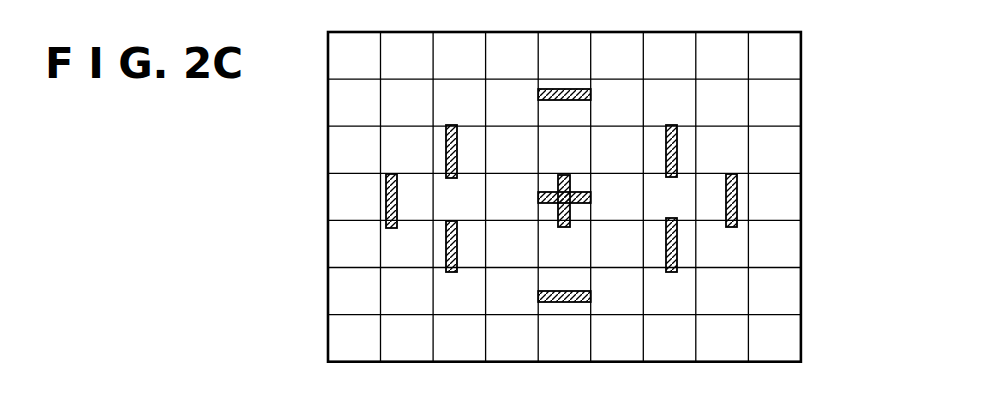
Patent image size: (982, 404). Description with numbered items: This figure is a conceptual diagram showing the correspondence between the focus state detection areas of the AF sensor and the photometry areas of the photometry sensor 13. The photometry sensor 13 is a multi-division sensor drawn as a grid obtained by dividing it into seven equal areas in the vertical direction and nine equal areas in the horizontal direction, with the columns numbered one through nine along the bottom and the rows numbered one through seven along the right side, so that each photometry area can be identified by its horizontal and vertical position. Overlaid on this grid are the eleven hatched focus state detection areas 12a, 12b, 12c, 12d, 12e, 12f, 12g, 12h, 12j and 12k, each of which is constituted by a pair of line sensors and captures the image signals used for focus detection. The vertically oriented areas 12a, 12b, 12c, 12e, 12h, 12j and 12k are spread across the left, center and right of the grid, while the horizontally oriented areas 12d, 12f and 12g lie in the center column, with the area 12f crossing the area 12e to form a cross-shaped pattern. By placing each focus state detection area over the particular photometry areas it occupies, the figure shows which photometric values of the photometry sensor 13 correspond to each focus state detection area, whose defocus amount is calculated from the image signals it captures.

The photometry sensor 13 is at (328, 45).
The focus state detection area 12a is at (394, 174).
The focus state detection area 12b is at (455, 125).
The focus state detection area 12c is at (452, 221).
The focus state detection area 12d is at (591, 94).
The focus state detection area 12e is at (564, 175).
The focus state detection area 12f is at (591, 197).
The focus state detection area 12g is at (600, 287).
The focus state detection area 12h is at (671, 125).
The focus state detection area 12j is at (671, 218).
The focus state detection area 12k is at (731, 174).